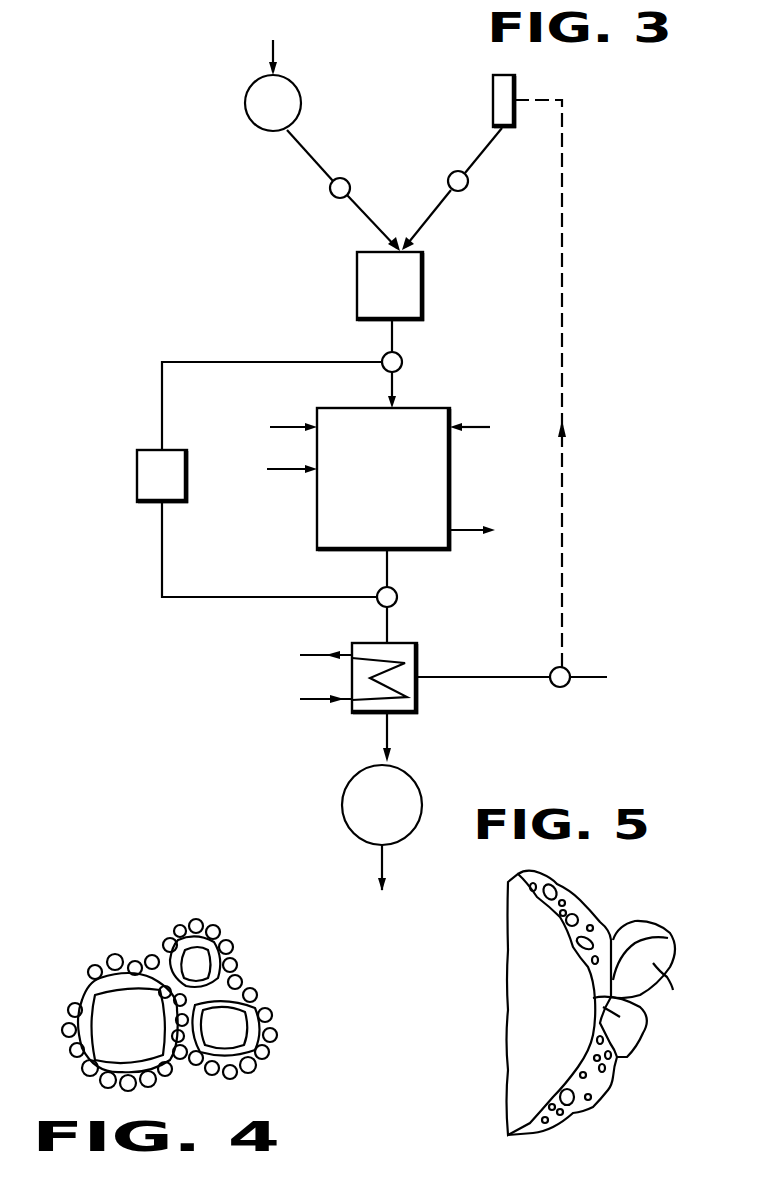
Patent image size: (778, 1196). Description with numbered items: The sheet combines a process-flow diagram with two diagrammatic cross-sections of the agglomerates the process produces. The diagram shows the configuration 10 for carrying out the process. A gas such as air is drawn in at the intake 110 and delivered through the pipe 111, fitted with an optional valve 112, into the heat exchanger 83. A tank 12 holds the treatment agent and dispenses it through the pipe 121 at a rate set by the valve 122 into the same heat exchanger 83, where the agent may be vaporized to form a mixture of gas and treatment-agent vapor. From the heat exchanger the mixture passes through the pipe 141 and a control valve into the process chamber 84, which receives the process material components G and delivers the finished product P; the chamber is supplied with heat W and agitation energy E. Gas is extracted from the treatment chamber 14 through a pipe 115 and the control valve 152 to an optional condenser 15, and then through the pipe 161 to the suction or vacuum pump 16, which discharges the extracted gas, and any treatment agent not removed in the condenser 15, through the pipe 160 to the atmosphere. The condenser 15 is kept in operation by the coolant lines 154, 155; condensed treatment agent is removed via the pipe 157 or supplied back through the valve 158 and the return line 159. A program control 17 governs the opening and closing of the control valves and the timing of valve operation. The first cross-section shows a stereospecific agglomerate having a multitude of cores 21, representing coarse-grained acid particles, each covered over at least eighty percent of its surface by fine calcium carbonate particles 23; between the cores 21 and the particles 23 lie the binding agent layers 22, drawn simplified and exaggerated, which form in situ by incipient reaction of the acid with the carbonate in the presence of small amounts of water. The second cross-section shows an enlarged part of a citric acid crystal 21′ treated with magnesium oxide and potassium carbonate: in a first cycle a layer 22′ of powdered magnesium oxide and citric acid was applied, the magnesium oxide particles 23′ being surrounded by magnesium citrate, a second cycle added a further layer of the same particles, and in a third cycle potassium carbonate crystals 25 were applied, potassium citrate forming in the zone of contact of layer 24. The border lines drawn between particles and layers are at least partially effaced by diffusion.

In FIG. 3, the gas intake 110 is at (276, 70).
In FIG. 3, the pipe 111 is at (307, 150).
In FIG. 3, the valve 112 is at (330, 194).
In FIG. 3, the tank 12 is at (492, 97).
In FIG. 3, the pipe 121 is at (487, 148).
In FIG. 3, the valve 122 is at (468, 186).
In FIG. 3, the heat exchanger 83 is at (390, 286).
In FIG. 3, the configuration 10 is at (262, 335).
In FIG. 3, the pipe 141 is at (392, 333).
In FIG. 3, the treatment chamber 14 is at (402, 364).
In FIG. 3, the return line 159 is at (563, 268).
In FIG. 3, the program control 17 is at (259, 479).
In FIG. 3, the process chamber 84 is at (376, 479).
In FIG. 3, the outlet line 115 is at (392, 565).
In FIG. 3, the control valve 152 is at (397, 600).
In FIG. 3, the condenser 15 is at (418, 653).
In FIG. 3, the coolant line 154 is at (299, 658).
In FIG. 3, the coolant line 155 is at (298, 701).
In FIG. 3, the pipe 157 is at (468, 678).
In FIG. 3, the valve 158 is at (564, 669).
In FIG. 3, the pipe 161 is at (392, 735).
In FIG. 3, the suction or vacuum pump 16 is at (341, 815).
In FIG. 3, the pipe 160 is at (377, 867).
In FIG. 4, the core 21 is at (117, 1033).
In FIG. 4, the binding agent layer 22 is at (128, 990).
In FIG. 4, the calcium carbonate particle 23 is at (110, 960).
In FIG. 5, the citric acid crystal 21′ is at (520, 1010).
In FIG. 5, the layer 22′ is at (553, 893).
In FIG. 5, the magnesium oxide particle 23′ is at (588, 945).
In FIG. 5, the layer 24 is at (612, 945).
In FIG. 5, the potassium carbonate crystal 25 is at (630, 1027).